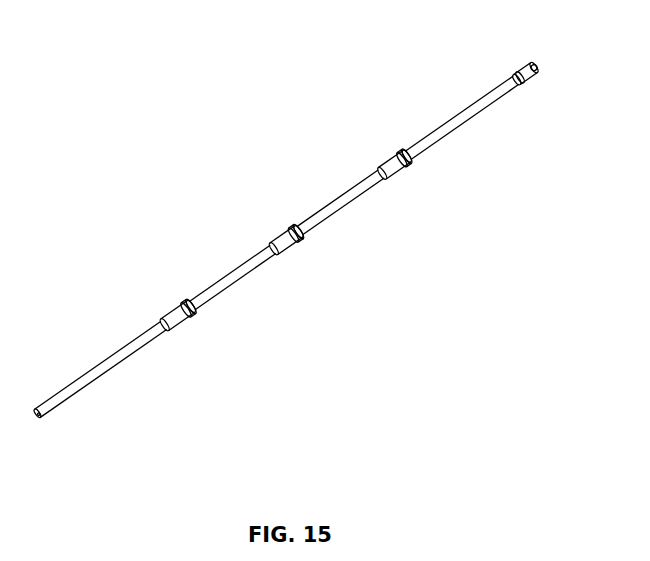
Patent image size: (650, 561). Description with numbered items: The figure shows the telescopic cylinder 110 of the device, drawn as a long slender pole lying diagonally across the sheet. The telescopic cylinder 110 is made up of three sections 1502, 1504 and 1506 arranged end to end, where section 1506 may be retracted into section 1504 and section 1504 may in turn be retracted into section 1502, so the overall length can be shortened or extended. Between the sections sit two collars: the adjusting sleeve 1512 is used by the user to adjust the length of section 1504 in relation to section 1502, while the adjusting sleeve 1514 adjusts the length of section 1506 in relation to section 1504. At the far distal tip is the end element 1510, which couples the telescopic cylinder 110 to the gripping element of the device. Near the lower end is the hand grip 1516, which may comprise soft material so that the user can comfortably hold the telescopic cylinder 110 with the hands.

The telescopic cylinder 110 is at (160, 243).
The section 1502 is at (243, 321).
The section 1504 is at (354, 246).
The section 1506 is at (467, 161).
The end element 1510 is at (573, 164).
The adjusting sleeve 1512 is at (217, 172).
The adjusting sleeve 1514 is at (376, 106).
The hand grip 1516 is at (130, 262).